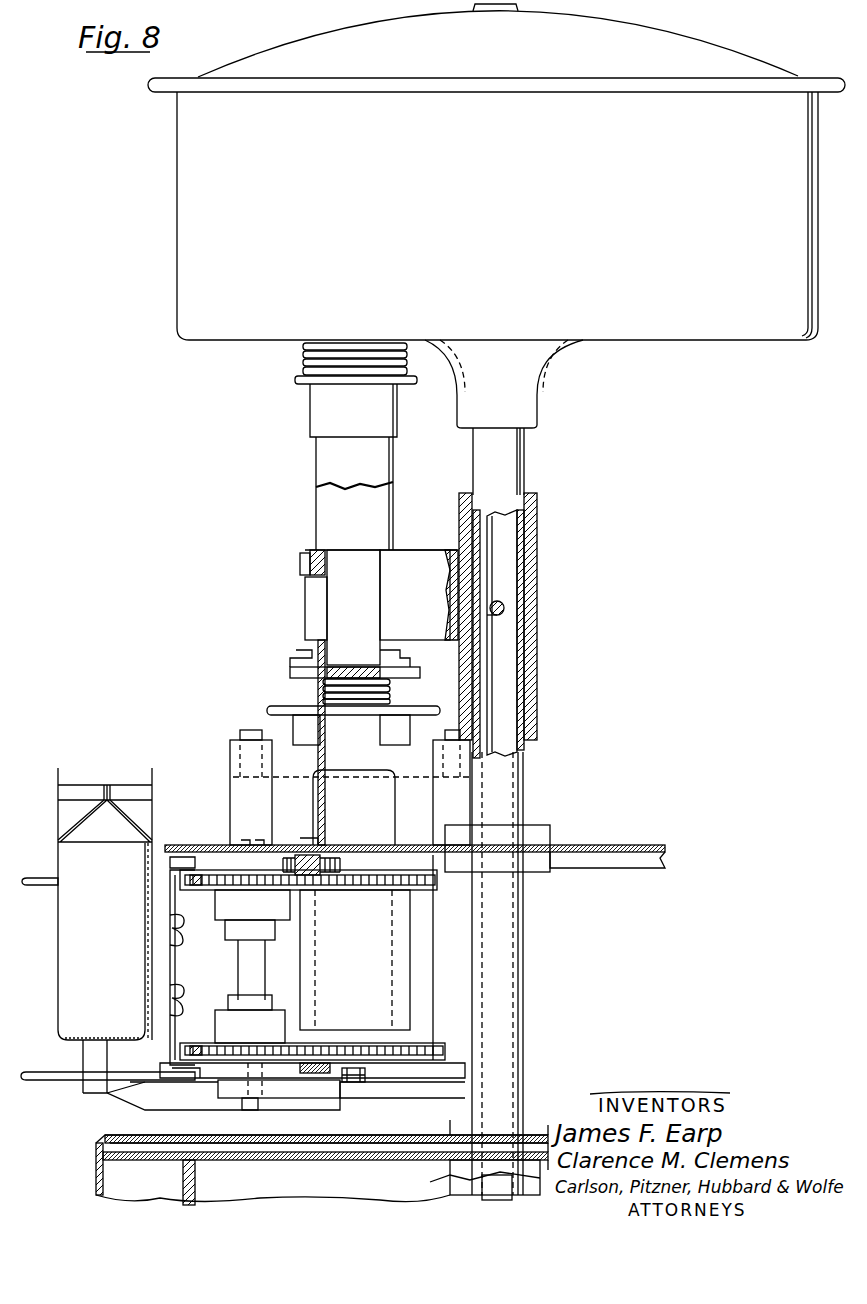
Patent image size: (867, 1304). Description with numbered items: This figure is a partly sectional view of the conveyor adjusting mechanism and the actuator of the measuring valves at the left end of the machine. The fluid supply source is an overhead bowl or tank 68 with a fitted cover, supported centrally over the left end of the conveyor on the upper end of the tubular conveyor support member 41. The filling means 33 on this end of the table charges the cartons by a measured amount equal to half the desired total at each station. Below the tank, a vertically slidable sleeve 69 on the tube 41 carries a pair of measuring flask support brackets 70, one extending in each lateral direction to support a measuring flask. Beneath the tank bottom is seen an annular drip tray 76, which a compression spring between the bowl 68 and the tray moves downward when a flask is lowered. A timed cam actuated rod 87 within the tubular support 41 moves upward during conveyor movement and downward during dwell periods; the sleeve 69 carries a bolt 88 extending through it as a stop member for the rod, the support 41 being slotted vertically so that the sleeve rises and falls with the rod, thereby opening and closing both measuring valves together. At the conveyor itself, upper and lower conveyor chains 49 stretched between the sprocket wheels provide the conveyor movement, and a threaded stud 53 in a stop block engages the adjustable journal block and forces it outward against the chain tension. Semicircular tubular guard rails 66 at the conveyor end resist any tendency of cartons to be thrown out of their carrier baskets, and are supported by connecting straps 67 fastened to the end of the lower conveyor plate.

The tank 68 is at (650, 288).
The drip tray 76 is at (300, 385).
The filling means 33 is at (291, 524).
The measuring flask support brackets 70 is at (411, 560).
The sleeve 69 is at (537, 572).
The bolt 88 is at (505, 608).
The cam actuated rod 87 is at (500, 690).
The tubular conveyor support member 41 is at (525, 777).
The conveyor chains 49 is at (425, 890).
The guard rails 66 is at (40, 890).
The connecting straps 67 is at (150, 1108).
The stud 53 is at (356, 1083).